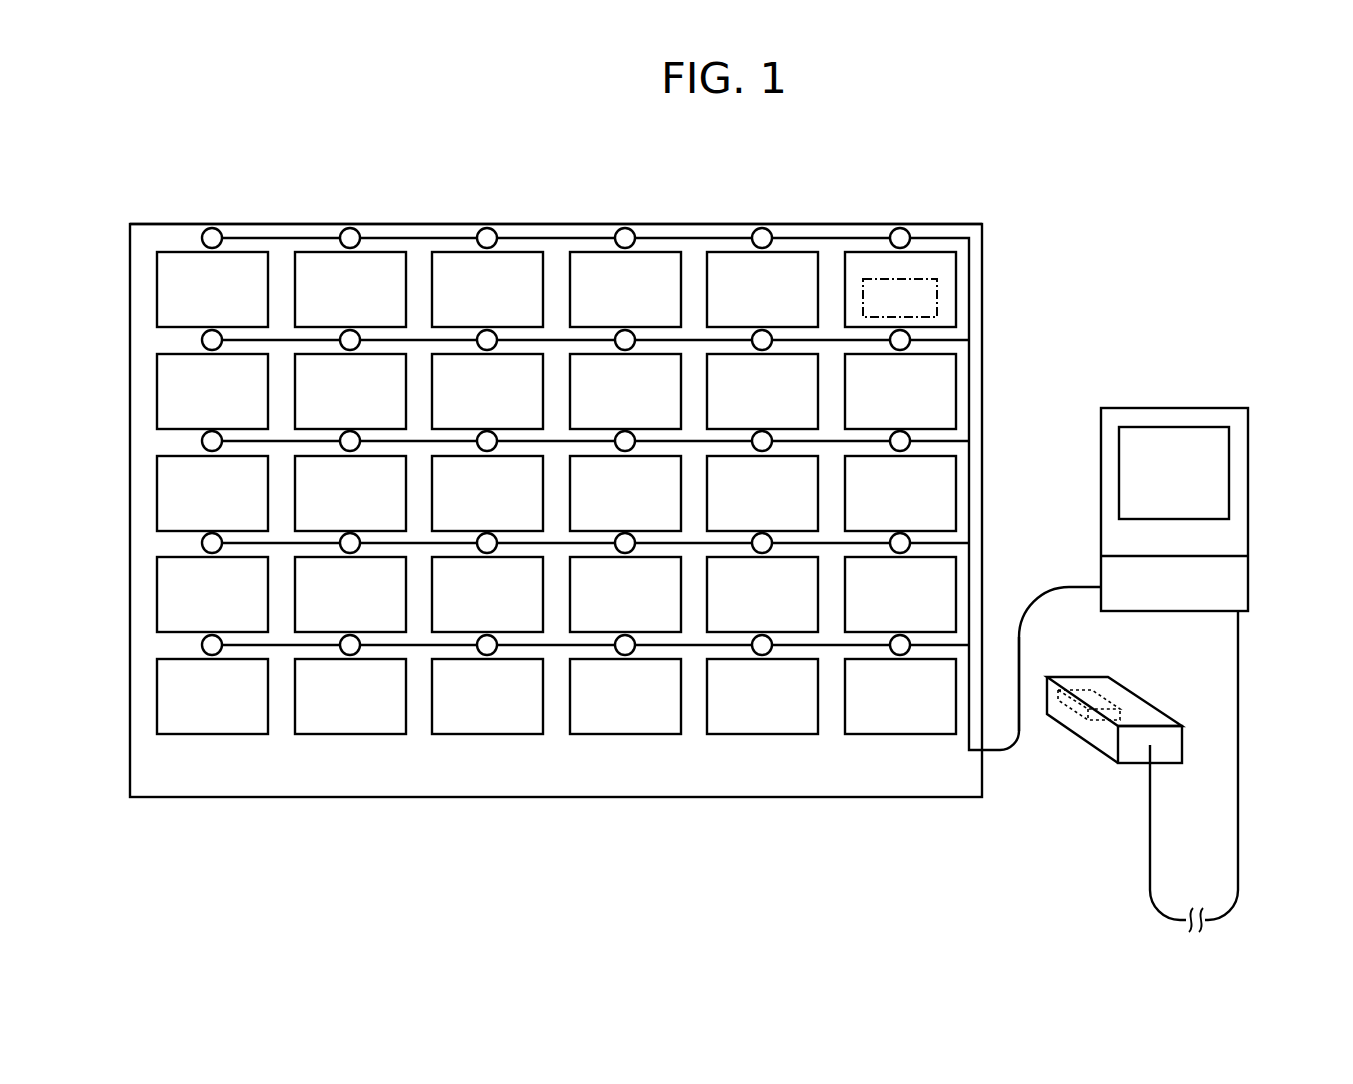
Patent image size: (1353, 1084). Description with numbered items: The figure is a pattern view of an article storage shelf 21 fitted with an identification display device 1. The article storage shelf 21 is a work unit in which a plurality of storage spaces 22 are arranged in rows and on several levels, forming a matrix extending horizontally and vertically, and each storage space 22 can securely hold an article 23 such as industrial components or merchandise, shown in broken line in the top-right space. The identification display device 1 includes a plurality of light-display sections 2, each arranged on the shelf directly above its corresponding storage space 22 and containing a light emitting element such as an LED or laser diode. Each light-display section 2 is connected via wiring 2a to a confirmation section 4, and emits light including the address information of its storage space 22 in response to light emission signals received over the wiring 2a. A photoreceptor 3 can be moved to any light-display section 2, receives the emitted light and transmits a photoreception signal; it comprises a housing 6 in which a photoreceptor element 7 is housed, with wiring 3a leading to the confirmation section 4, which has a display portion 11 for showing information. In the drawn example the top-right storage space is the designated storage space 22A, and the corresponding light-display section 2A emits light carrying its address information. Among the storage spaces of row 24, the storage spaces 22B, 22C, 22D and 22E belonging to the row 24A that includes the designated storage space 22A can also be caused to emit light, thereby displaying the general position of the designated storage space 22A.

The identification display device 1 is at (1163, 195).
The light-display section 2 is at (762, 330).
The light-display section 2A is at (900, 228).
The wiring 2a is at (1021, 640).
The photoreceptor 3 is at (1128, 715).
The wiring 3a is at (1240, 762).
The confirmation section 4 is at (1188, 392).
The housing 6 is at (1160, 707).
The photoreceptor element 7 is at (1112, 692).
The display portion 11 is at (1220, 468).
The article storage shelf 21 is at (970, 221).
The storage space 22 is at (597, 265).
The designated storage space 22A is at (950, 261).
The storage space 22B is at (950, 363).
The storage space 22C is at (945, 478).
The storage space 22D is at (950, 577).
The storage space 22E is at (927, 720).
The article 23 is at (937, 291).
The row 24 is at (589, 168).
The row 24A is at (943, 208).